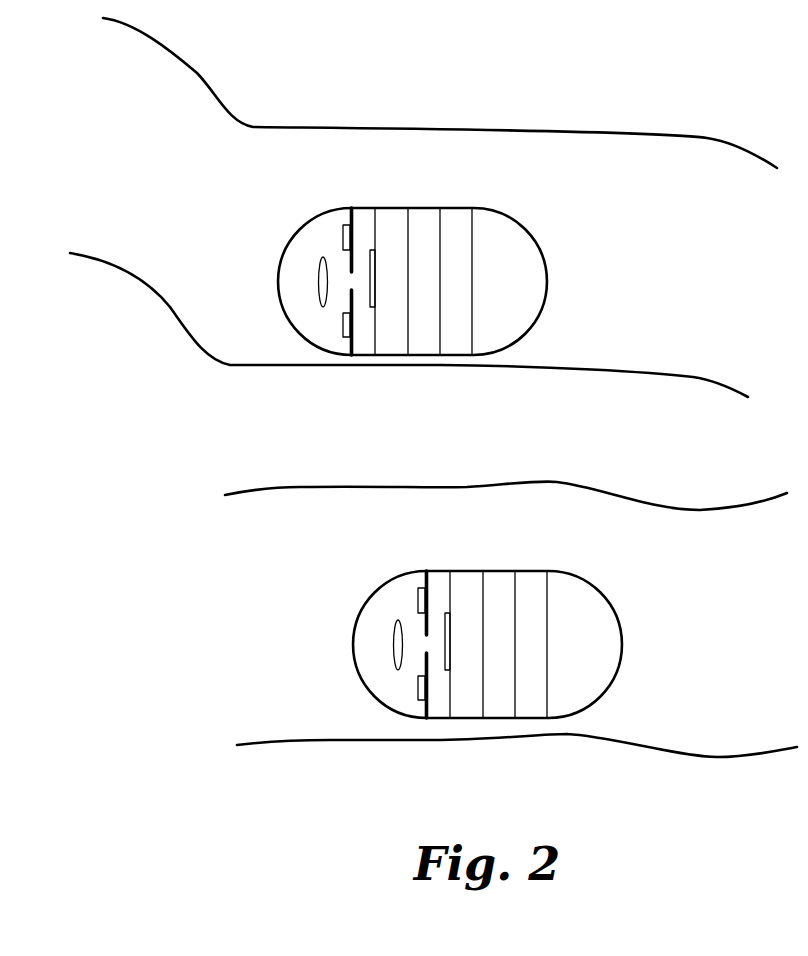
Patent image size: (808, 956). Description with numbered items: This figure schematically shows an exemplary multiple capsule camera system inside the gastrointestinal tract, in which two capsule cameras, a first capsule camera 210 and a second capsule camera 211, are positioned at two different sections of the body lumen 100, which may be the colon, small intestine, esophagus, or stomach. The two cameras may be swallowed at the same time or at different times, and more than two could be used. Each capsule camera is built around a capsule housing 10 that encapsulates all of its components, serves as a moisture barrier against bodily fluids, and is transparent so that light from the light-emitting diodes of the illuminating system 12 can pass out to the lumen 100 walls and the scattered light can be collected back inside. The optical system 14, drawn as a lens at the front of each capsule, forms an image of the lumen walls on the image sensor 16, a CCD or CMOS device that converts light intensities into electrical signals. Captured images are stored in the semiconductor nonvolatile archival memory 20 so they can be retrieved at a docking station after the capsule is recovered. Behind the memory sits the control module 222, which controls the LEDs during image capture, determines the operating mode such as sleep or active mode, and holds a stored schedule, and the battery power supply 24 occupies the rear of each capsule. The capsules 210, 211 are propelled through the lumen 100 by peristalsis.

The capsule housing 10 is at (290, 242).
The illuminating system 12 is at (343, 238).
The optical system 14 is at (320, 285).
The image sensor 16 is at (371, 250).
The archival memory 20 is at (392, 212).
The control module 222 is at (430, 217).
The battery power supply 24 is at (460, 218).
The body lumen 100 is at (177, 320).
The first capsule camera 210 is at (640, 652).
The second capsule camera 211 is at (565, 250).